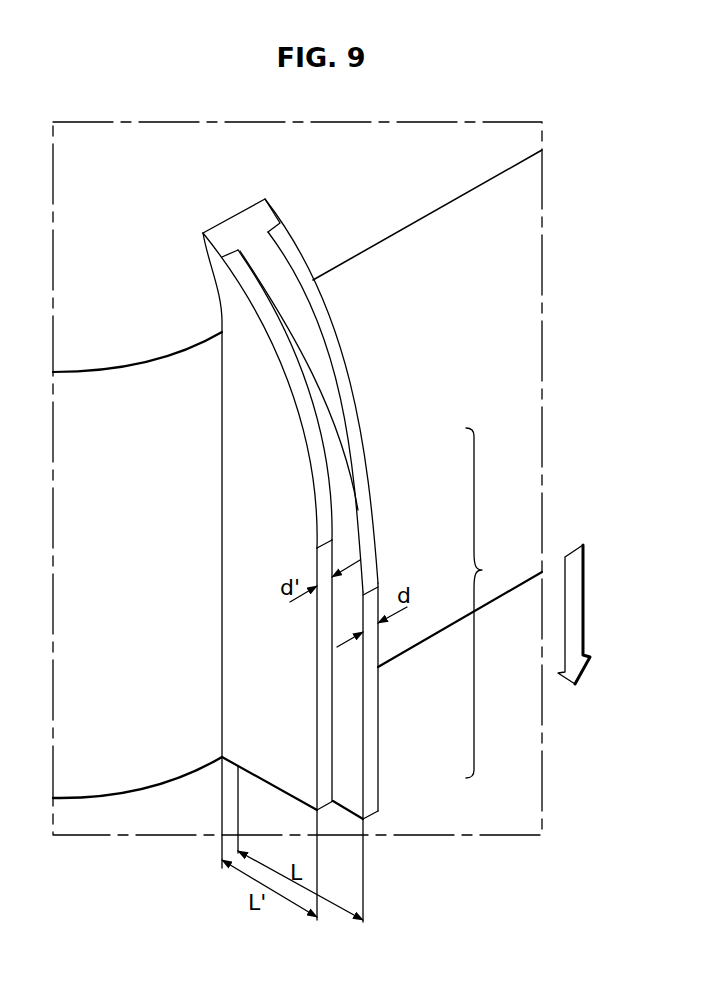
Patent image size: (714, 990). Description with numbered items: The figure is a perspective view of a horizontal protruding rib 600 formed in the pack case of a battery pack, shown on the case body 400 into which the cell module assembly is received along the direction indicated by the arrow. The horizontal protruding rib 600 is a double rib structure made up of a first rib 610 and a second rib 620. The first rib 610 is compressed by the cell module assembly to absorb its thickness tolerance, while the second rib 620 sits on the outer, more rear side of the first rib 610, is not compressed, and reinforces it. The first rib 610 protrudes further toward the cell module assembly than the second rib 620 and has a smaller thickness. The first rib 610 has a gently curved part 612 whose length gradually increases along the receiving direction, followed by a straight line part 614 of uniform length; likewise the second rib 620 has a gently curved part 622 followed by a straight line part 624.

The case body 400 is at (460, 328).
The horizontal protruding rib 600 is at (362, 550).
The first rib 610 is at (372, 680).
The curved part 612 is at (337, 412).
The straight line part 614 is at (376, 559).
The second rib 620 is at (358, 427).
The curved part 622 is at (306, 438).
The straight line part 624 is at (321, 683).